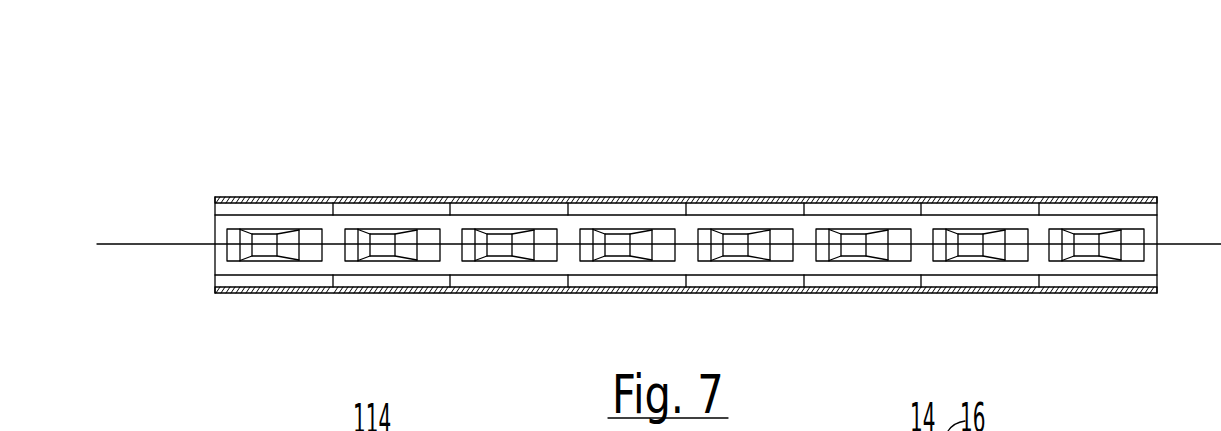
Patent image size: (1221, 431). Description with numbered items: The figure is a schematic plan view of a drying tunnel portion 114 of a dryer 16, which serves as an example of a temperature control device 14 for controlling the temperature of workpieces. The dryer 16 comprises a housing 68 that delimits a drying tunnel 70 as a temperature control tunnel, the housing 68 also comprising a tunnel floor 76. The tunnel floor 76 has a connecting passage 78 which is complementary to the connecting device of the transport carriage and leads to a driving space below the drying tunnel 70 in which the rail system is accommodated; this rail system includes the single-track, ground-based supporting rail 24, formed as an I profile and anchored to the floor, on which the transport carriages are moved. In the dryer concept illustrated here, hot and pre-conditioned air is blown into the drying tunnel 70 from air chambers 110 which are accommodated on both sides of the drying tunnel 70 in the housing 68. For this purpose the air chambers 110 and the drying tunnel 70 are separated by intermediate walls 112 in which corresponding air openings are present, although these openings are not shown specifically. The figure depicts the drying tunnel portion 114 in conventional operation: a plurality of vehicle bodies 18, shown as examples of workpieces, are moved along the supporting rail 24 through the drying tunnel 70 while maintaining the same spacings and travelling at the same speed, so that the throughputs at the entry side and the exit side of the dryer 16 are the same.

The temperature control device 14 is at (882, 154).
The dryer 16 is at (944, 169).
The vehicle bodies 18 is at (262, 255).
The supporting rail 24 is at (120, 243).
The housing 68 is at (520, 198).
The drying tunnel 70 is at (1042, 233).
The tunnel floor 76 is at (223, 226).
The connecting passage 78 is at (330, 232).
The air chambers 110 is at (720, 208).
The intermediate walls 112 is at (637, 217).
The drying tunnel portion 114 is at (353, 164).